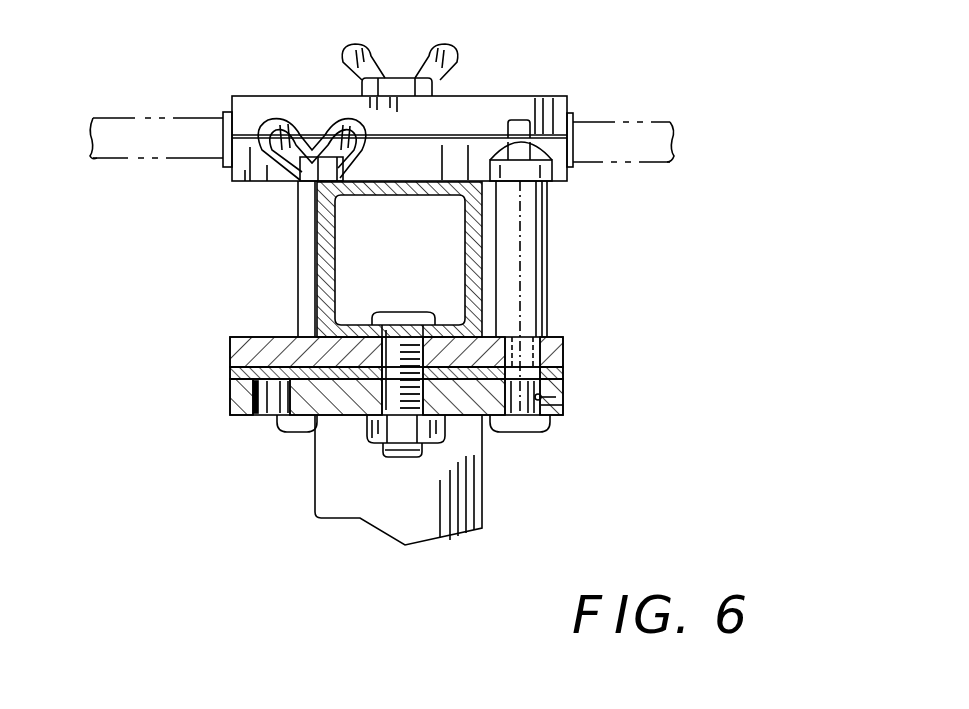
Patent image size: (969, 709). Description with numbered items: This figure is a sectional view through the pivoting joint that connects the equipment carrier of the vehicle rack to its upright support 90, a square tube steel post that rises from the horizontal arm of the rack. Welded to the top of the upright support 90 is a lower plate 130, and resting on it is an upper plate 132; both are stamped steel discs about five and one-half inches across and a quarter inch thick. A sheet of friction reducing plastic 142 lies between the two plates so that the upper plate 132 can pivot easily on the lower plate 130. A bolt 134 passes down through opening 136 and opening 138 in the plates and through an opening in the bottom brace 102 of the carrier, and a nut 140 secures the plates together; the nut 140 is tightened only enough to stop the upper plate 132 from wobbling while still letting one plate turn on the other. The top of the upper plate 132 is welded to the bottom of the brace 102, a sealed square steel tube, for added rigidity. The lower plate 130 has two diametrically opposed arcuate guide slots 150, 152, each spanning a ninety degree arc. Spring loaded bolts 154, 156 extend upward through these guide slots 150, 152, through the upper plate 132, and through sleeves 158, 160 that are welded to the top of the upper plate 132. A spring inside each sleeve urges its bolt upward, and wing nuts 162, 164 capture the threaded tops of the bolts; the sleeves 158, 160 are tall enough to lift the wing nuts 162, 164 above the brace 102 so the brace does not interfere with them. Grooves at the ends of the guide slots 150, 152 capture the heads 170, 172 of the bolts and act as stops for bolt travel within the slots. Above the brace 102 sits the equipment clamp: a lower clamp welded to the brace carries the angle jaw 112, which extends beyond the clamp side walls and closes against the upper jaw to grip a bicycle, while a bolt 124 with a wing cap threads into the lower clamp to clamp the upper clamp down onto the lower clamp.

The upright support 90 is at (358, 504).
The bottom brace 102 is at (470, 237).
The angle jaw 112 is at (569, 105).
The bolt with wing cap 124 is at (352, 48).
The lower plate 130 is at (556, 403).
The upper plate 132 is at (556, 356).
The bolt 134 is at (388, 355).
The opening 136 is at (411, 405).
The opening 138 is at (233, 341).
The nut 140 is at (360, 443).
The sheet of friction reducing plastic 142 is at (232, 374).
The arcuate guide slot 150 is at (558, 386).
The arcuate guide slot 152 is at (256, 396).
The spring loaded bolt 154 is at (517, 432).
The spring loaded bolt 156 is at (280, 417).
The sleeve 158 is at (518, 286).
The sleeve 160 is at (310, 195).
The wing nut 162 is at (556, 183).
The wing nut 164 is at (282, 132).
The bolt head 170 is at (551, 419).
The bolt head 172 is at (308, 432).